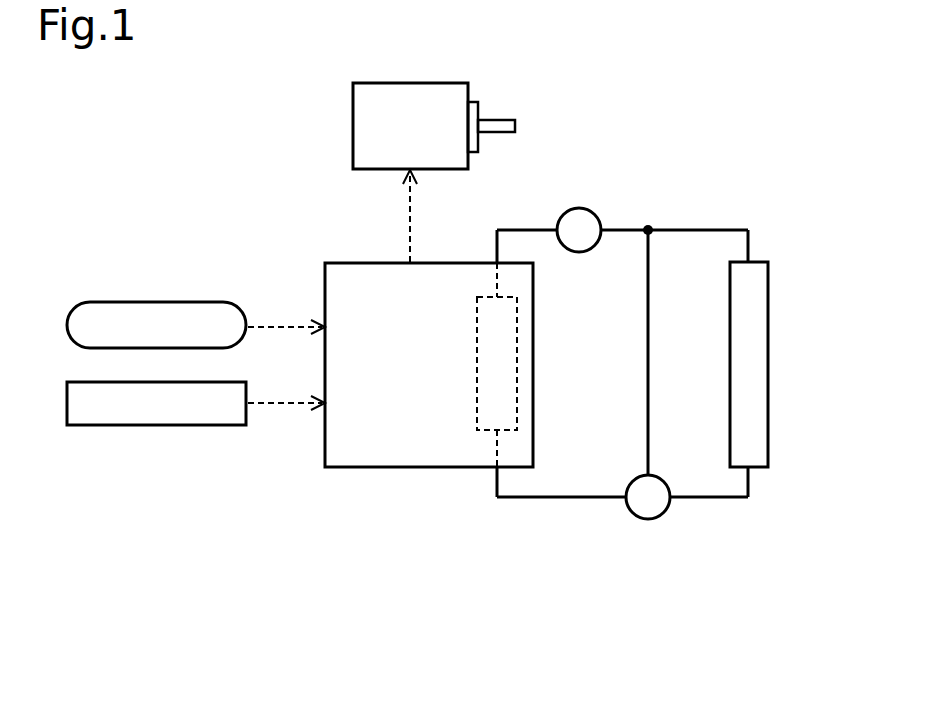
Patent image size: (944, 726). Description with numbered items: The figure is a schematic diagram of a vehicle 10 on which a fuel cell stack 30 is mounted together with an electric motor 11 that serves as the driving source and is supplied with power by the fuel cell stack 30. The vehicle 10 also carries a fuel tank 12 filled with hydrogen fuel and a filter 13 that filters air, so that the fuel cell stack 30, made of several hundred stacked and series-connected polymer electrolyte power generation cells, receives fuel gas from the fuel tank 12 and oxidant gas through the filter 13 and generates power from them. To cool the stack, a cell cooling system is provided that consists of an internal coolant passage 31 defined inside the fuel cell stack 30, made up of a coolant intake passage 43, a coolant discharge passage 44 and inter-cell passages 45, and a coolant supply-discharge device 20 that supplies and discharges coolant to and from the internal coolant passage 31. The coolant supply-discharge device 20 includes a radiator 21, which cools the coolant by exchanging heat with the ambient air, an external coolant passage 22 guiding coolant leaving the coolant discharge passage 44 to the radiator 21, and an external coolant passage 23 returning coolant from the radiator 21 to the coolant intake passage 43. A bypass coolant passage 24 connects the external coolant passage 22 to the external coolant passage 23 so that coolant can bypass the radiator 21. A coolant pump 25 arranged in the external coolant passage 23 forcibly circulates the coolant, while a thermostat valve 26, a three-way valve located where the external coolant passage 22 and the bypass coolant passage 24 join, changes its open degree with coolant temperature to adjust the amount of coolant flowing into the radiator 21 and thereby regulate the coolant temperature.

The vehicle 10 is at (745, 151).
The electric motor 11 is at (352, 126).
The fuel tank 12 is at (156, 300).
The filter 13 is at (156, 428).
The coolant supply-discharge device 20 is at (707, 516).
The radiator 21 is at (768, 358).
The external coolant passage 22 is at (561, 500).
The external coolant passage 23 is at (699, 228).
The bypass coolant passage 24 is at (652, 290).
The coolant pump 25 is at (580, 207).
The thermostat valve 26 is at (648, 519).
The fuel cell stack 30 is at (412, 470).
The internal coolant passage 31 is at (562, 365).
The coolant intake passage 43 is at (497, 282).
The coolant discharge passage 44 is at (497, 445).
The inter-cell passages 45 is at (517, 363).